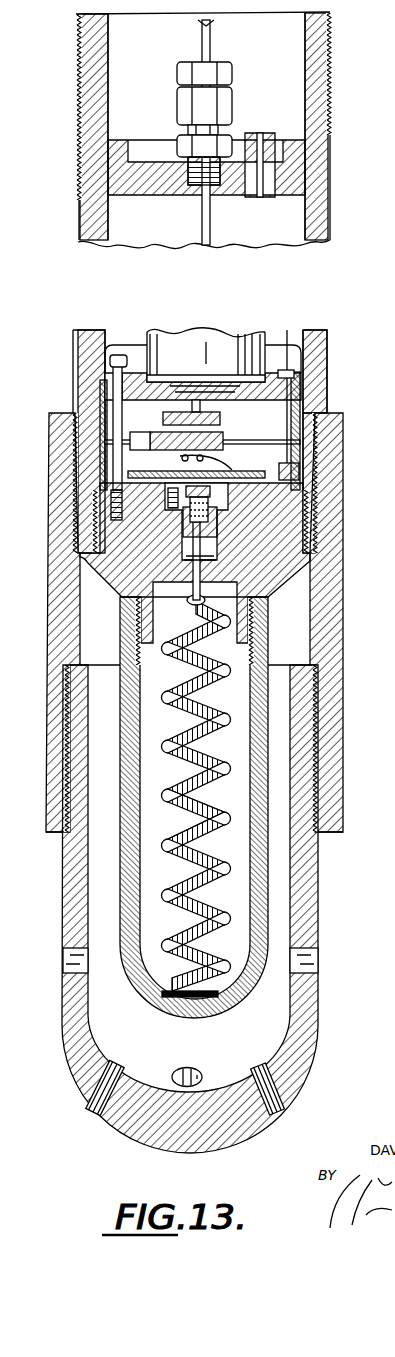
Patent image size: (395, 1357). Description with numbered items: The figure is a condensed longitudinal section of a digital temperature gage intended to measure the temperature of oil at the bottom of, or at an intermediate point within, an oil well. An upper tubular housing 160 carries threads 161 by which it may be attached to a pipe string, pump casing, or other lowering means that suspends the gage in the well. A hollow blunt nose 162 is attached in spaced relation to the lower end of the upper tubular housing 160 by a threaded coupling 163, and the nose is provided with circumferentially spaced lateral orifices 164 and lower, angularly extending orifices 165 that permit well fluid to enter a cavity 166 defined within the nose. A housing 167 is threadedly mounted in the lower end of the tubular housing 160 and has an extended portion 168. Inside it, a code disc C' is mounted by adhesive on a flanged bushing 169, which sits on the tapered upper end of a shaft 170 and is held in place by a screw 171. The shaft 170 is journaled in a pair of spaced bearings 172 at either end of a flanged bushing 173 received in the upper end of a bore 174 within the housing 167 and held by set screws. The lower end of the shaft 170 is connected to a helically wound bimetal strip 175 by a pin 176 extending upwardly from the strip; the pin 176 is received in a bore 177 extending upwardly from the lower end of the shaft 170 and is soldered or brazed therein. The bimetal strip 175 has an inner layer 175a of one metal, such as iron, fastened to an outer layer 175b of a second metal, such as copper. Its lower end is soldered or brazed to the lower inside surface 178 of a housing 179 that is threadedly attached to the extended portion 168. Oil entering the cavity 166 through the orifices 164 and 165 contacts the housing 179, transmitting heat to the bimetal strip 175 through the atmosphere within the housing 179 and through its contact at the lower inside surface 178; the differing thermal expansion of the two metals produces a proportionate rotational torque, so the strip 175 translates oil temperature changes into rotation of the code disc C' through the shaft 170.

The upper tubular housing 160 is at (332, 192).
The threads 161 is at (332, 88).
The hollow blunt nose 162 is at (318, 1016).
The threaded coupling 163 is at (345, 627).
The lateral orifices 164 is at (314, 966).
The lower, angularly extending orifices 165 is at (278, 1108).
The cavity 166 is at (203, 1061).
The housing 167 is at (276, 592).
The extended portion 168 is at (266, 635).
The flanged bushing 169 is at (214, 494).
The shaft 170 is at (212, 521).
The screw 171 is at (156, 468).
The bearings 172 is at (186, 526).
The flanged bushing 173 is at (214, 536).
The bore 174 is at (203, 562).
The bimetal strip 175 is at (176, 717).
The inner layer 175a is at (201, 788).
The outer layer 175b is at (192, 766).
The pin 176 is at (204, 592).
The bore 177 is at (188, 553).
The lower inside surface 178 is at (180, 998).
The housing 179 is at (201, 1016).
The code disc C' is at (219, 462).